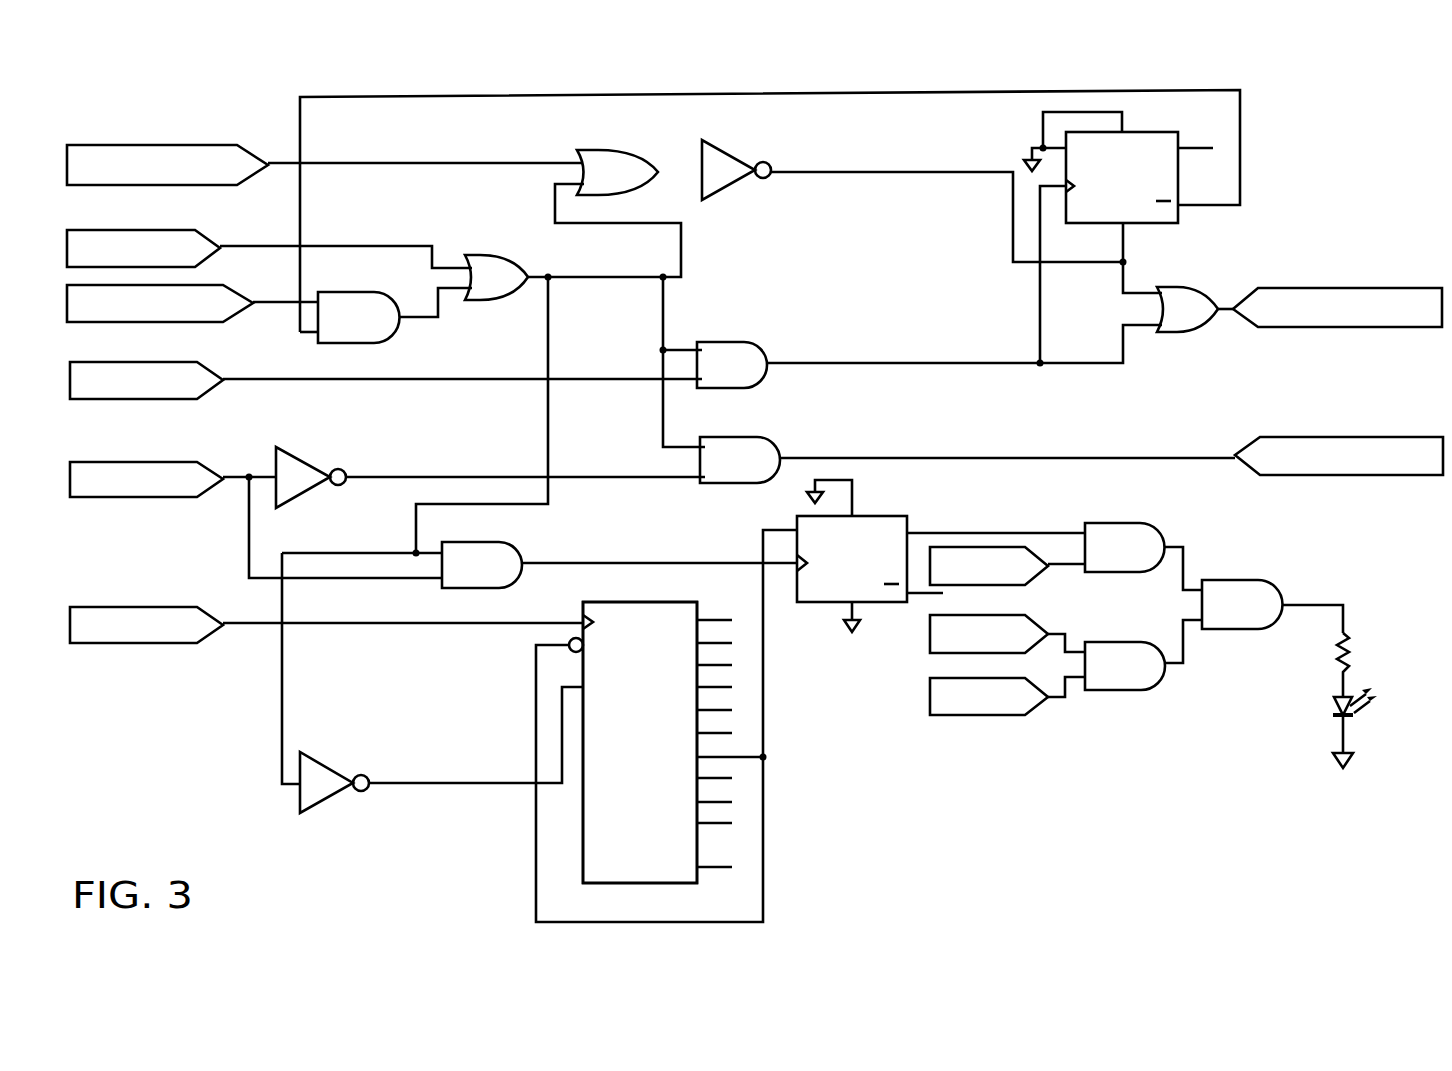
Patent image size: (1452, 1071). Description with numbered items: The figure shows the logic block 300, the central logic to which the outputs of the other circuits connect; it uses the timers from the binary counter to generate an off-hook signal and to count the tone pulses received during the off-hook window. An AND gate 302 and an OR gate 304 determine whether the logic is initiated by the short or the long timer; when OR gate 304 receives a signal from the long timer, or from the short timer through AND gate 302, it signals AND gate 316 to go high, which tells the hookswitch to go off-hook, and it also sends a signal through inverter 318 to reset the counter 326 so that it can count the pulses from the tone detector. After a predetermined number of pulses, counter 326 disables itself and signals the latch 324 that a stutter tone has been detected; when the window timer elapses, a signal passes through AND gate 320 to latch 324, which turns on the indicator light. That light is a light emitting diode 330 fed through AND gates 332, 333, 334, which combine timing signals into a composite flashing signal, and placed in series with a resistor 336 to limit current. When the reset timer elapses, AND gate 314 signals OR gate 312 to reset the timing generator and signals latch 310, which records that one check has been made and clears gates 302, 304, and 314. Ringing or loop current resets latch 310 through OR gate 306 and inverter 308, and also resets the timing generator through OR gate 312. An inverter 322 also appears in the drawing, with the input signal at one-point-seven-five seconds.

The logic block 300 is at (250, 119).
The AND gate 302 is at (392, 341).
The OR gate 304 is at (482, 257).
The OR gate 306 is at (612, 152).
The inverter 308 is at (725, 152).
The latch 310 is at (1150, 133).
The OR gate 312 is at (1190, 331).
The AND gate 314 is at (712, 342).
The AND gate 316 is at (715, 437).
The inverter 318 is at (322, 765).
The AND gate 320 is at (510, 586).
The inverter 322 is at (298, 457).
The latch 324 is at (862, 516).
The counter 326 is at (583, 840).
The light emitting diode 330 is at (1330, 715).
The AND gate 332 is at (1105, 523).
The AND gate 333 is at (1210, 580).
The AND gate 334 is at (1110, 690).
The resistor 336 is at (1350, 662).